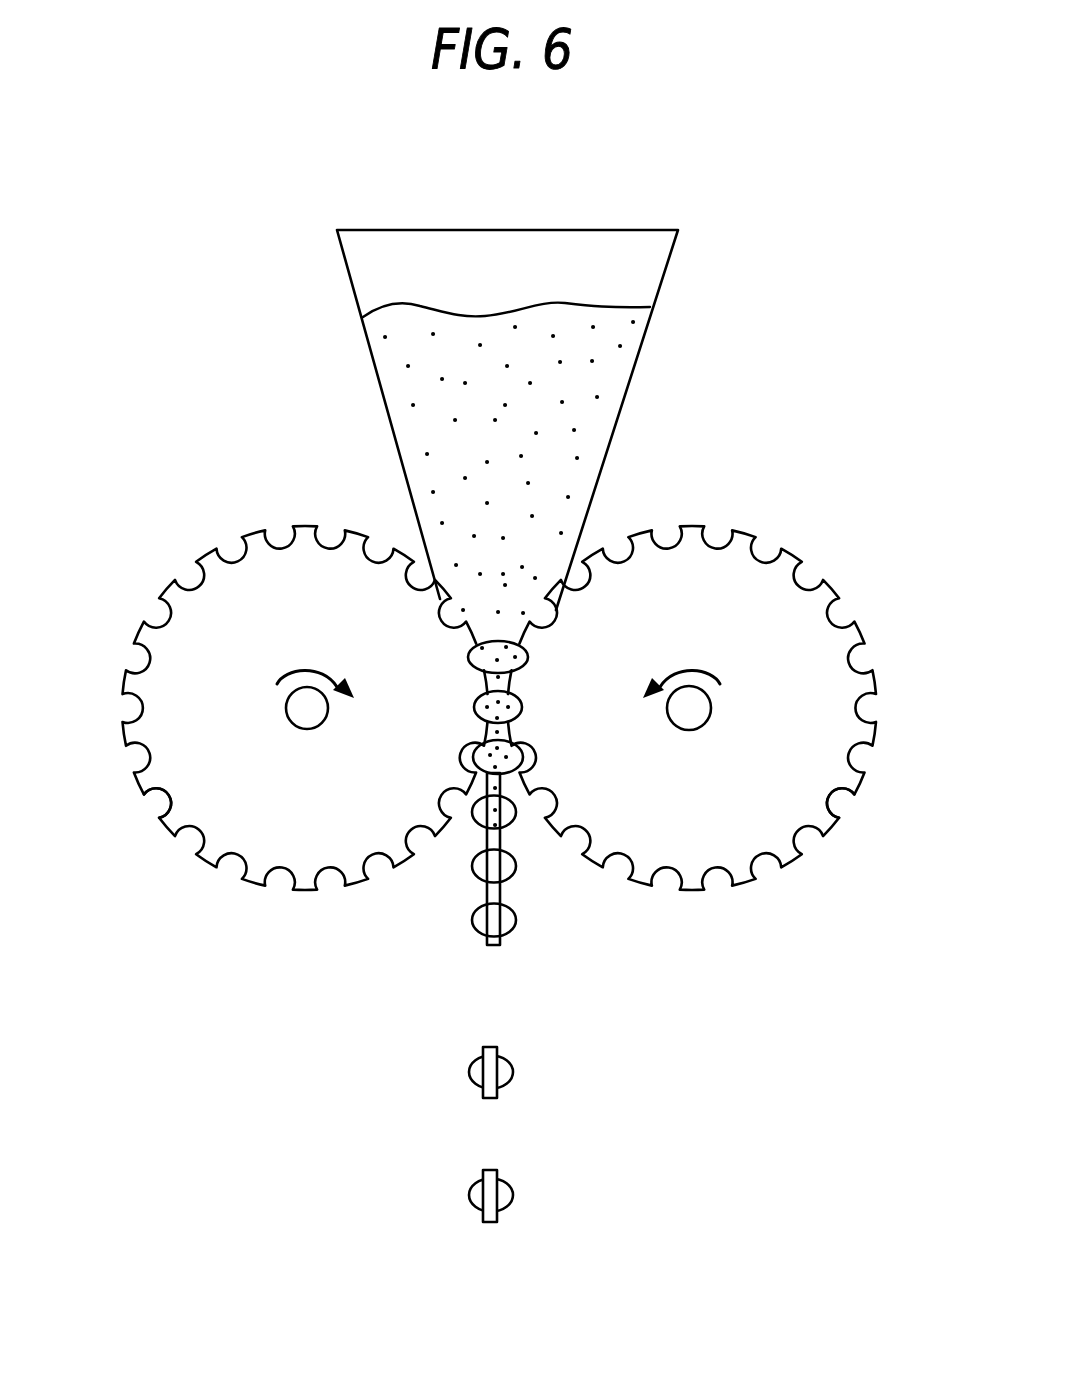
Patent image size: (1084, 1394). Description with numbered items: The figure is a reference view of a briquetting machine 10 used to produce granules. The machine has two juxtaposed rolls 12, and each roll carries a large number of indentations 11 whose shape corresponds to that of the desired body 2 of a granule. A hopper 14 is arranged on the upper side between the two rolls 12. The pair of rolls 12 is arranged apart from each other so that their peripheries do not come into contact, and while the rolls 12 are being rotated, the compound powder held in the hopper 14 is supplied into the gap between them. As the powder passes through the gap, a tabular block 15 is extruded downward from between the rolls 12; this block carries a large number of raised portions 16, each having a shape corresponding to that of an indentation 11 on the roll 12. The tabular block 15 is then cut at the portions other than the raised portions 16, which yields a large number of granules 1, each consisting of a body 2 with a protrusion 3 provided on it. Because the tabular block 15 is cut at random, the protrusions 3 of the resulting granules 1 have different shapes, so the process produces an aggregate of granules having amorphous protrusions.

The granule 1 is at (531, 1090).
The body of a granule 2 is at (470, 1071).
The protrusion 3 is at (491, 1046).
The briquetting machine 10 is at (812, 435).
The indentations 11 is at (198, 577).
The rolls 12 is at (173, 826).
The hopper 14 is at (614, 375).
The tabular block 15 is at (492, 893).
The raised portions 16 is at (512, 866).